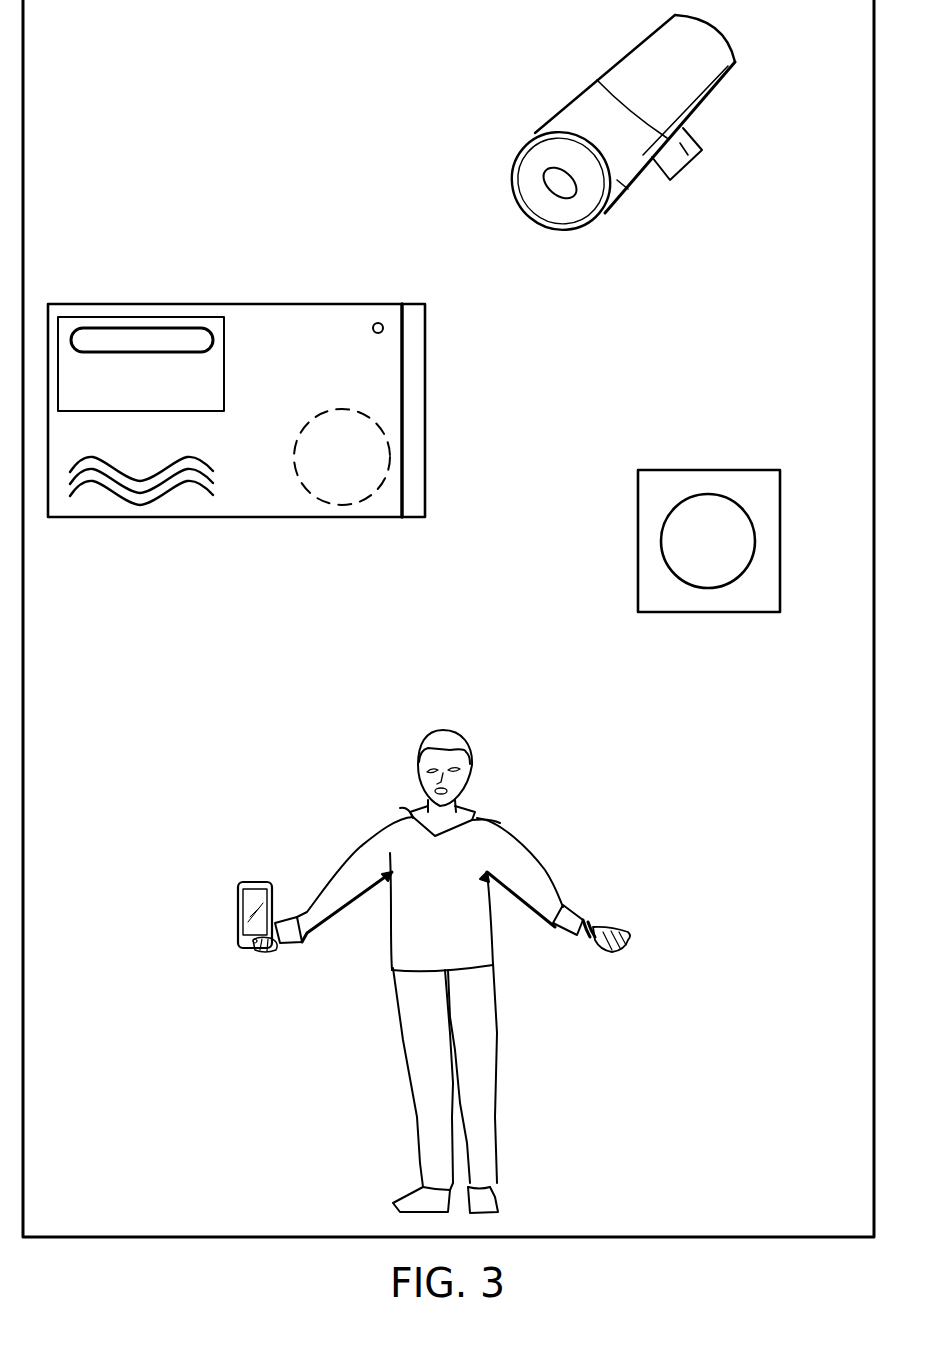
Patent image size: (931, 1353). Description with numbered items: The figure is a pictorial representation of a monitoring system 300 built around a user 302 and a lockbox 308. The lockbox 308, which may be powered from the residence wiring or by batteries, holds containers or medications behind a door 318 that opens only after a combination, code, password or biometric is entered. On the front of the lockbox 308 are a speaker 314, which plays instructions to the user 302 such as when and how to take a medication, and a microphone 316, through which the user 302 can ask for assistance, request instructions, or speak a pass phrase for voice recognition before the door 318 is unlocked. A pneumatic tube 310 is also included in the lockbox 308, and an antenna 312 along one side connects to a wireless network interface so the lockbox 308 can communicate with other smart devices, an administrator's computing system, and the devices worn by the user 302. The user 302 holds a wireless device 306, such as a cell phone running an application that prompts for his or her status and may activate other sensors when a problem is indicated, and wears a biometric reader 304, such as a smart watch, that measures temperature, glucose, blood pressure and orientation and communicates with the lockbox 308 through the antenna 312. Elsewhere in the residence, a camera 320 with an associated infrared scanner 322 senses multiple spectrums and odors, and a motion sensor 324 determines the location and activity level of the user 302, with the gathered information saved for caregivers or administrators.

The monitoring system 300 is at (252, 126).
The user 302 is at (443, 729).
The biometric reader 304 is at (588, 940).
The wireless device 306 is at (238, 918).
The lockbox 308 is at (197, 298).
The pneumatic tube 310 is at (342, 504).
The antenna 312 is at (416, 408).
The speaker 314 is at (140, 506).
The microphone 316 is at (381, 323).
The door 318 is at (225, 363).
The camera 320 is at (610, 80).
The infrared (IR) scanner 322 is at (698, 163).
The motion sensor 324 is at (710, 468).